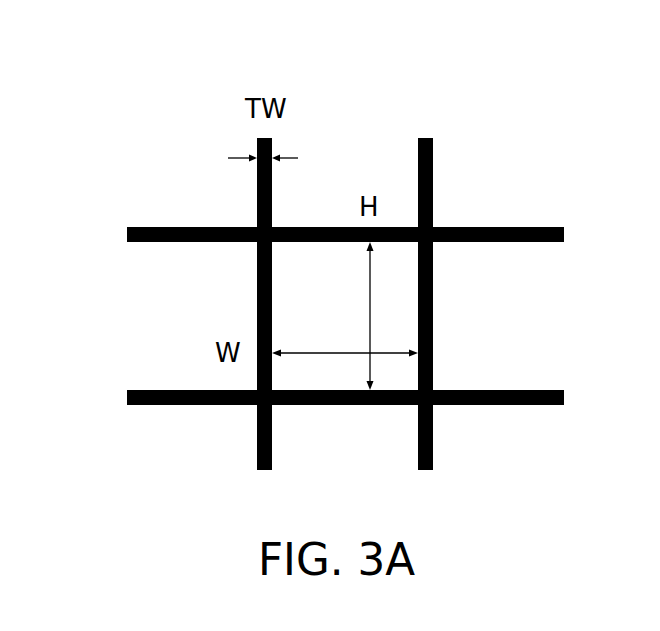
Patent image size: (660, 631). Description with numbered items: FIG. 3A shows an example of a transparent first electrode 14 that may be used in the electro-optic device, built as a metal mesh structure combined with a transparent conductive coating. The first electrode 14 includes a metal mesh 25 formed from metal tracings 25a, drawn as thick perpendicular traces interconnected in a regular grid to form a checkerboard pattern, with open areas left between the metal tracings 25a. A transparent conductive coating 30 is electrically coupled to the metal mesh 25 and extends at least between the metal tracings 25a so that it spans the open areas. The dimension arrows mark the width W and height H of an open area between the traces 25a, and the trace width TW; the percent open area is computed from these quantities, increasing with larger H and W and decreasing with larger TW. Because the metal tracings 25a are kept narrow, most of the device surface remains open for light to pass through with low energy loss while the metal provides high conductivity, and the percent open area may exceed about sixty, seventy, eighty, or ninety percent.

The first electrode 14 is at (336, 48).
The metal mesh 25 is at (558, 227).
The metal tracings 25a is at (515, 390).
The transparent conductive coating 30 is at (313, 285).